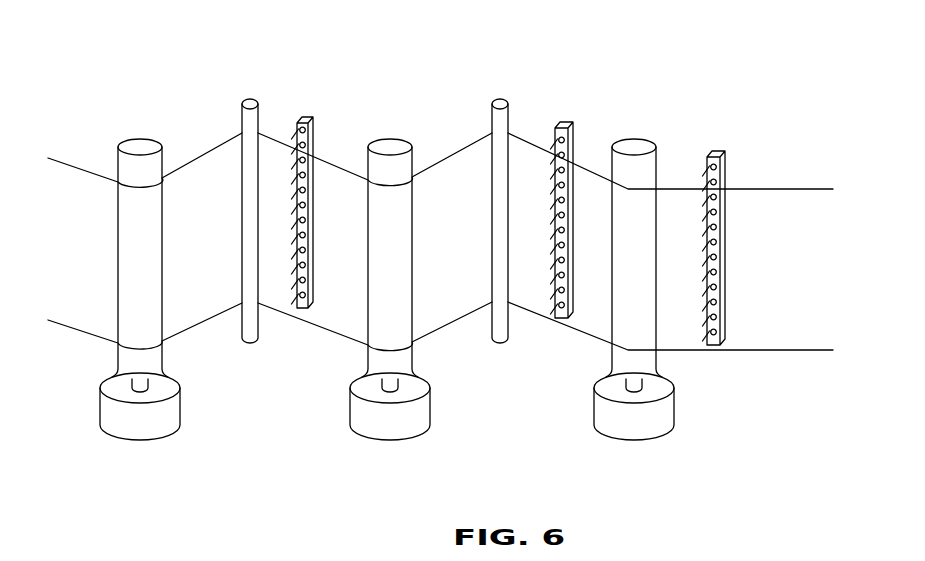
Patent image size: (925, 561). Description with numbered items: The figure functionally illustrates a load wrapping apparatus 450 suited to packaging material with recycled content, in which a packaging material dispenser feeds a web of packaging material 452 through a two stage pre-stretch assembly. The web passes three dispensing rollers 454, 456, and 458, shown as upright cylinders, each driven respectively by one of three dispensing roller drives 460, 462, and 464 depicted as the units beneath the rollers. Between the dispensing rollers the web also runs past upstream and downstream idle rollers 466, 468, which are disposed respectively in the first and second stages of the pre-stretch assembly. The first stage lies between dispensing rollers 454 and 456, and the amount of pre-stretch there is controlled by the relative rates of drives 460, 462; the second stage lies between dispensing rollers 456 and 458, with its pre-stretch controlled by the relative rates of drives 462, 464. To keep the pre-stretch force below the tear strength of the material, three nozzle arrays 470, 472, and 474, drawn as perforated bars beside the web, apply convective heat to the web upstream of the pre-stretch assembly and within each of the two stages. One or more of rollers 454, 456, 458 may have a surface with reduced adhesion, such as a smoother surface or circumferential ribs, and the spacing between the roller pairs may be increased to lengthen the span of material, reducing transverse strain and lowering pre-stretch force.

The load wrapping apparatus 450 is at (124, 36).
The web of packaging material 452 is at (783, 341).
The dispensing roller 454 is at (618, 372).
The dispensing roller 456 is at (397, 137).
The dispensing roller 458 is at (147, 137).
The dispensing roller drive 460 is at (627, 430).
The dispensing roller drive 462 is at (378, 438).
The dispensing roller drive 464 is at (118, 438).
The upstream idle roller 466 is at (498, 98).
The downstream idle roller 468 is at (245, 100).
The nozzle array 470 is at (708, 349).
The nozzle array 472 is at (555, 127).
The nozzle array 474 is at (313, 308).